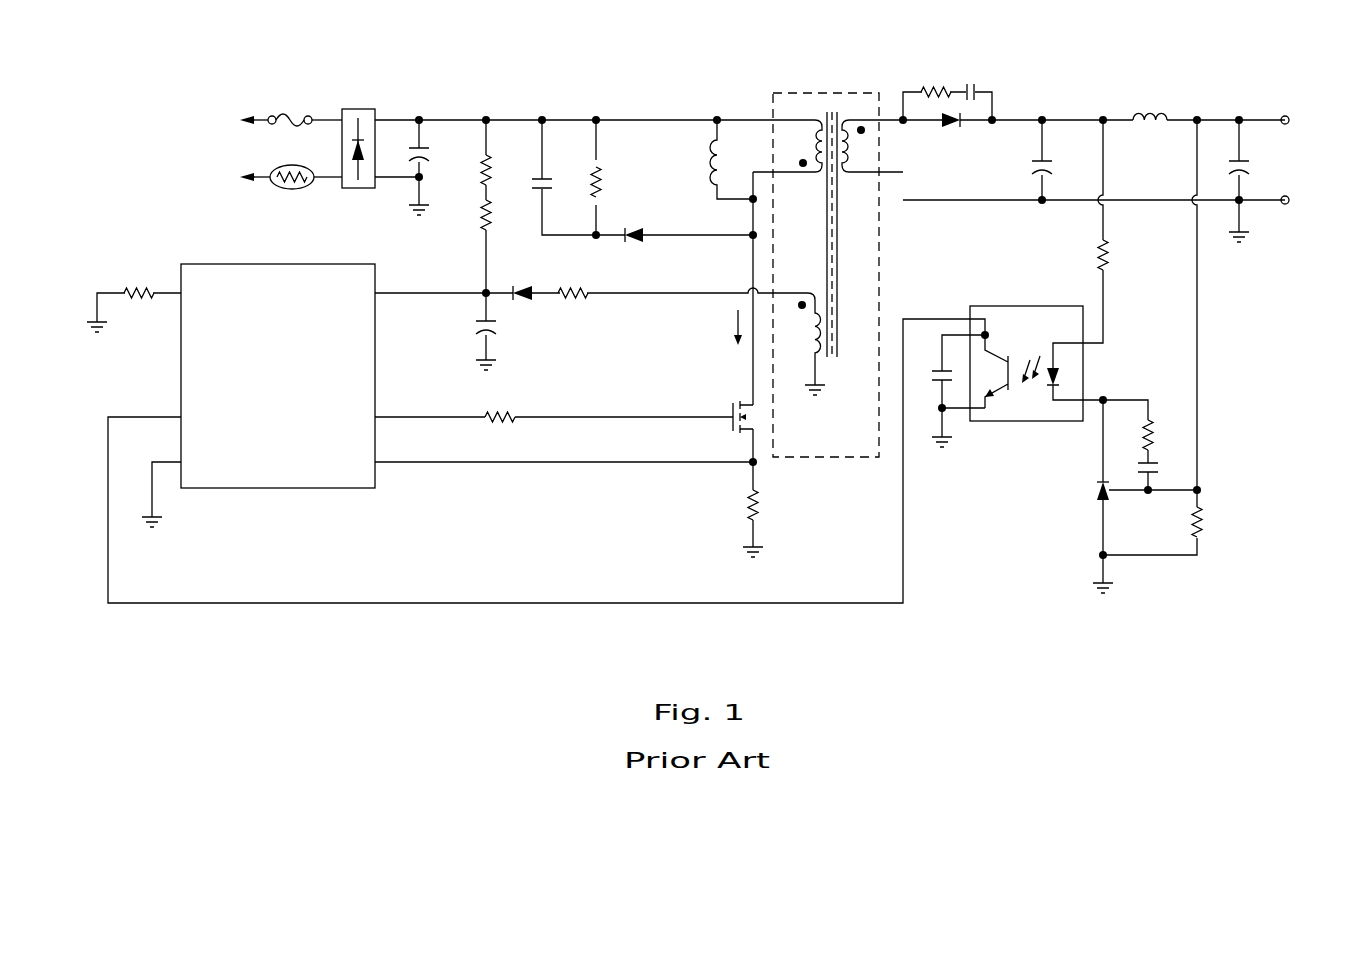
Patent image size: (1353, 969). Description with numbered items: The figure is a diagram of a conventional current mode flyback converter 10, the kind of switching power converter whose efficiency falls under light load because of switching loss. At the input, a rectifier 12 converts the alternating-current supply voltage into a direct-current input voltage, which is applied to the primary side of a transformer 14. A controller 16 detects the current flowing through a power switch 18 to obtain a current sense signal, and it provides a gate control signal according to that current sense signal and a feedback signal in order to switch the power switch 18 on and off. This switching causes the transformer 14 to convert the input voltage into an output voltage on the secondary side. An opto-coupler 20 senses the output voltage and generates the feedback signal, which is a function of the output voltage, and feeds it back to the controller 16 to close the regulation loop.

The current mode flyback converter 10 is at (1280, 62).
The rectifier 12 is at (358, 109).
The transformer 14 is at (792, 93).
The controller 16 is at (276, 264).
The power switch 18 is at (731, 401).
The opto-coupler 20 is at (1022, 306).